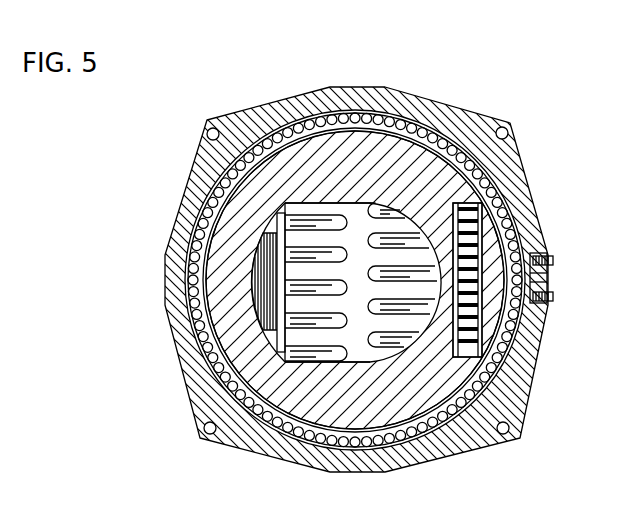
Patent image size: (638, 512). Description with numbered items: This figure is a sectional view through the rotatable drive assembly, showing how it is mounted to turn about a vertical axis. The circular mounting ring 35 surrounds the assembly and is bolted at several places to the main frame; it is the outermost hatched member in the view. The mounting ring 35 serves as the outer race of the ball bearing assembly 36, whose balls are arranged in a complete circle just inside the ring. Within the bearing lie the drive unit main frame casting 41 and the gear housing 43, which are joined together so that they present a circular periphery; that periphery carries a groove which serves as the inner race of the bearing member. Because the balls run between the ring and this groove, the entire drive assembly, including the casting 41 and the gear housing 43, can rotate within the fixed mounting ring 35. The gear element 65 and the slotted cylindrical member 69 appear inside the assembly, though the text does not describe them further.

The mounting ring 35 is at (200, 170).
The ball bearing assembly 36 is at (190, 262).
The drive unit main frame casting 41 is at (245, 372).
The gear housing 43 is at (516, 306).
The gear 65 is at (467, 233).
The slotted cylinder 69 is at (334, 226).